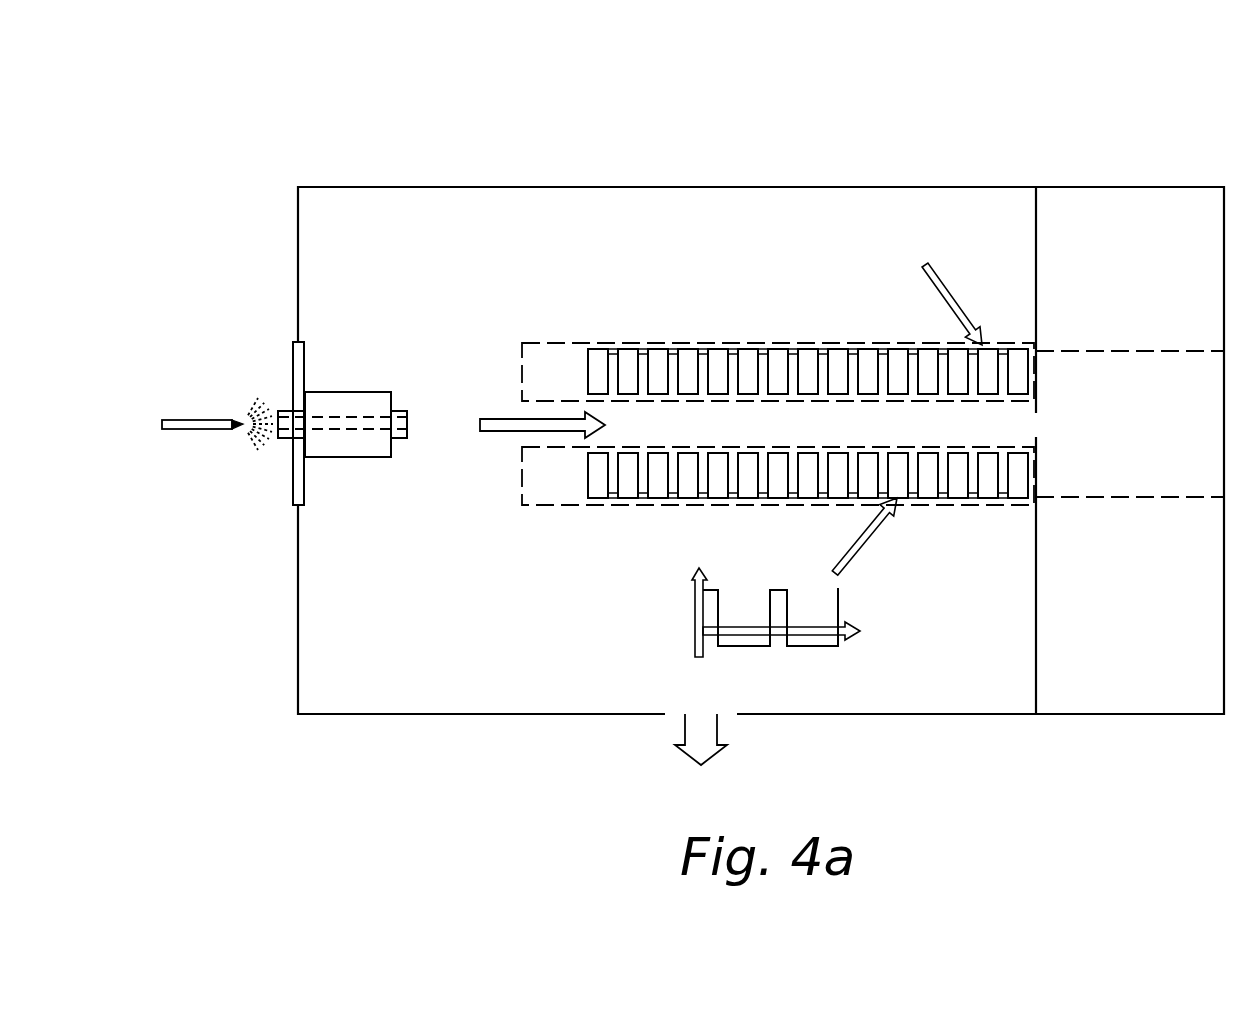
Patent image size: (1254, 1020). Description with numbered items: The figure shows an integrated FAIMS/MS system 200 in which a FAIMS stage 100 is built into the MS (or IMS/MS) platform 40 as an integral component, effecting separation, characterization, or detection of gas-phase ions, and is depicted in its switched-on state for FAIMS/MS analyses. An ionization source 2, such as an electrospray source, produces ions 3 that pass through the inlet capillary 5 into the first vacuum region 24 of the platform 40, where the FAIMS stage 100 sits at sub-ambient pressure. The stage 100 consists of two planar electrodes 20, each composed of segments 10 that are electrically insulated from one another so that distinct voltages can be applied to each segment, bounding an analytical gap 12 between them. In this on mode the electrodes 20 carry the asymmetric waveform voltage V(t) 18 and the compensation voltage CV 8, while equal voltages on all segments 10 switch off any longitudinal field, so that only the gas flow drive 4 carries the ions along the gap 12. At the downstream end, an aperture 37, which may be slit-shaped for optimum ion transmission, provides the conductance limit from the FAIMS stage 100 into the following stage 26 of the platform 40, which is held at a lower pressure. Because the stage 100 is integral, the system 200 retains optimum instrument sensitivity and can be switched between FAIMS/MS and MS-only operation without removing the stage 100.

The FAIMS/MS system 200 is at (342, 98).
The first vacuum region 24 is at (679, 450).
The following stage 26 is at (1184, 213).
The MS platform 40 is at (1130, 424).
The inlet capillary 5 is at (350, 457).
The ionization source 2 is at (213, 430).
The ions 3 is at (256, 410).
The gas flow drive 4 is at (492, 417).
The planar electrodes 20 is at (752, 342).
The segments 10 is at (897, 355).
The compensation voltage 8 is at (925, 265).
The analytical gap 12 is at (964, 423).
The aperture 37 is at (1036, 425).
The asymmetric waveform voltage 18 is at (778, 588).
The FAIMS stage 100 is at (564, 562).